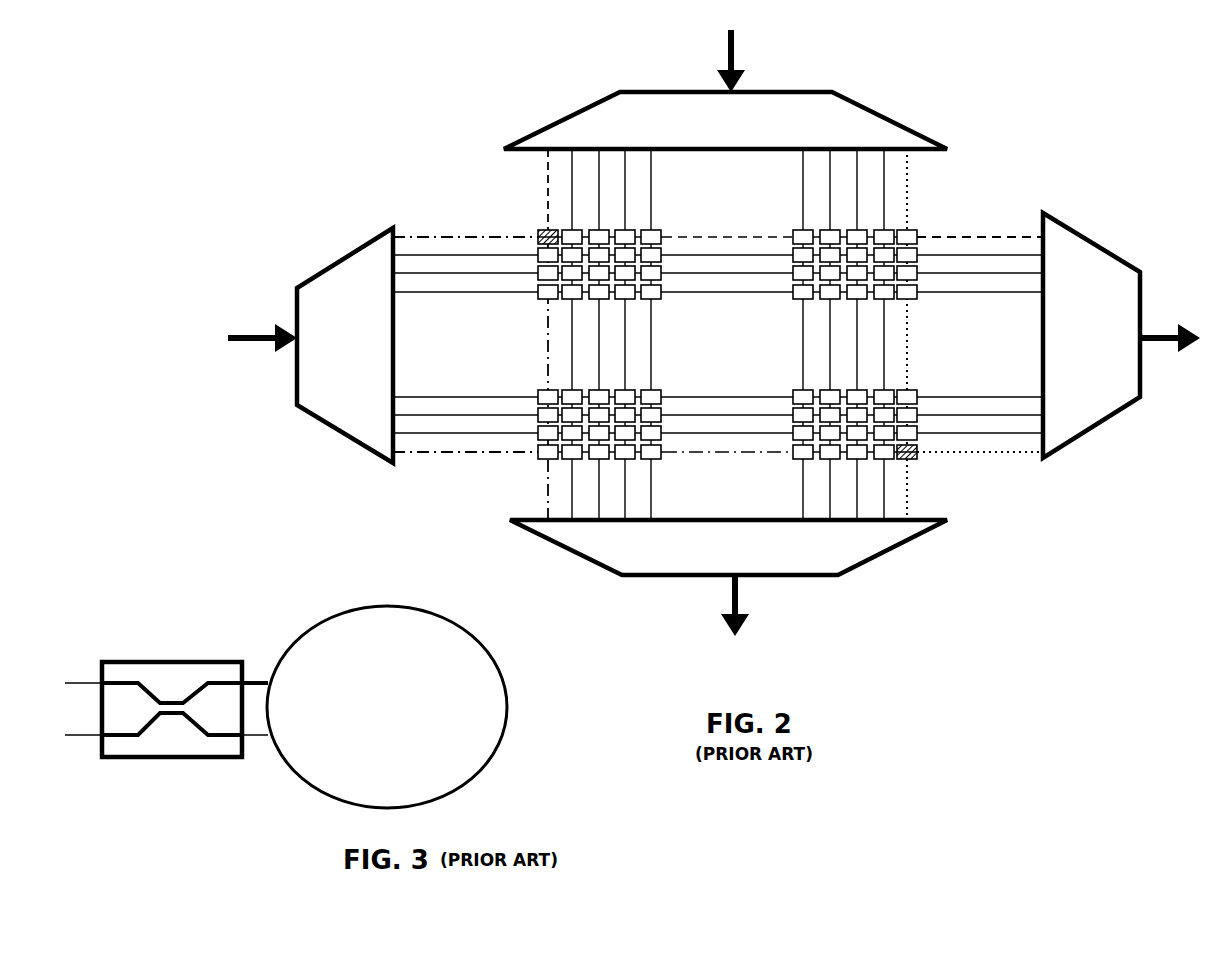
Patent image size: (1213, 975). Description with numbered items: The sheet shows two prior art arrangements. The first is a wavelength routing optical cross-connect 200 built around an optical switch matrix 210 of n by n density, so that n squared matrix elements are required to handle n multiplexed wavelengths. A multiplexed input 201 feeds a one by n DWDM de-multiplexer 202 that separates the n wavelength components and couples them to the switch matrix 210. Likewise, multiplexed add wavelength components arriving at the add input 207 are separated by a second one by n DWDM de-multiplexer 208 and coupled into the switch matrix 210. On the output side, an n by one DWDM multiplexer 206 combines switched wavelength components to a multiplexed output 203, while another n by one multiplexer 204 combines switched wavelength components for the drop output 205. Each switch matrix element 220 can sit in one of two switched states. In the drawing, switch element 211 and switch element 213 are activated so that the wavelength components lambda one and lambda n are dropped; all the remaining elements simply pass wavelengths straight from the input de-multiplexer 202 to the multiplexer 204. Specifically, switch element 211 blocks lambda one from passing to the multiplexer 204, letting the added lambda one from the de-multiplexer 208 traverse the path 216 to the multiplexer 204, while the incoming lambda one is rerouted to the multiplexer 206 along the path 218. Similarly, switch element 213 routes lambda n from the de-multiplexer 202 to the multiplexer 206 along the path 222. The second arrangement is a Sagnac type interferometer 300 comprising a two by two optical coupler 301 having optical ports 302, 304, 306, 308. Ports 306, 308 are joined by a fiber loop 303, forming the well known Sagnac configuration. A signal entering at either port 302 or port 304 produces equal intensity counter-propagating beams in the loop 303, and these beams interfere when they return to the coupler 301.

In FIG. 2, the wavelength routing optical cross-connect 200 is at (903, 692).
In FIG. 2, the multiplexed input 201 is at (722, 43).
In FIG. 2, the 1×n DWDM de-multiplexer 202 is at (615, 125).
In FIG. 2, the multiplexed output 203 is at (722, 617).
In FIG. 2, the n×1 multiplexer 204 is at (622, 543).
In FIG. 2, the drop output 205 is at (1182, 354).
In FIG. 2, the n×1 DWDM multiplexer 206 is at (1057, 413).
In FIG. 2, the add input 207 is at (270, 347).
In FIG. 2, the 1×n DWDM de-multiplexer 208 is at (367, 390).
In FIG. 2, the optical switch matrix 210 is at (958, 203).
In FIG. 2, the switch element 211 is at (537, 237).
In FIG. 2, the switch element 213 is at (912, 457).
In FIG. 2, the path 216 is at (432, 243).
In FIG. 2, the path 218 is at (792, 230).
In FIG. 2, the switch matrix element 220 is at (905, 207).
In FIG. 2, the path 222 is at (907, 352).
In FIG. 3, the Sagnac type interferometer 300 is at (244, 822).
In FIG. 3, the 2×2 optical coupler 301 is at (203, 673).
In FIG. 3, the optical port 302 is at (96, 677).
In FIG. 3, the fiber loop 303 is at (470, 640).
In FIG. 3, the optical port 304 is at (78, 740).
In FIG. 3, the optical port 306 is at (247, 682).
In FIG. 3, the optical port 308 is at (265, 736).